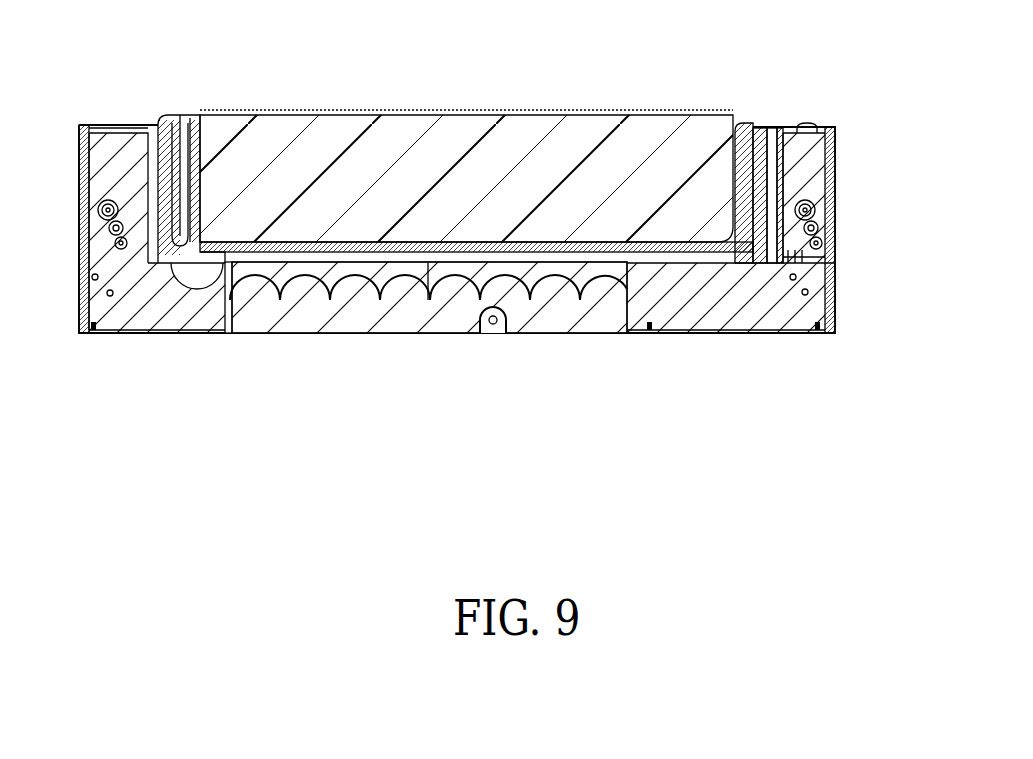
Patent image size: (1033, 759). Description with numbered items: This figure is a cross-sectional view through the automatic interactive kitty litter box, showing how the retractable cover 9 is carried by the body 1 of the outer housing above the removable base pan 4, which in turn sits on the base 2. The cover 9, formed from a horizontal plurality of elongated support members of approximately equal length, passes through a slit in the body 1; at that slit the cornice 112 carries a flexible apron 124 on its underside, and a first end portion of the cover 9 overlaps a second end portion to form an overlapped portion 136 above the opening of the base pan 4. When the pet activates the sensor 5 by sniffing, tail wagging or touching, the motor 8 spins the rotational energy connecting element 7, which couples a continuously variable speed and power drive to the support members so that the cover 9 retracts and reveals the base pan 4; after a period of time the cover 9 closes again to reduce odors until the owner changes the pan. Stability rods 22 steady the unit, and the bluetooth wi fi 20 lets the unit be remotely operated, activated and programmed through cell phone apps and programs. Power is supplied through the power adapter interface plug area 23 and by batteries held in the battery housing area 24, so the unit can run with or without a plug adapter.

The body 1 is at (164, 120).
The base 2 is at (151, 336).
The removable base pan 4 is at (755, 125).
The sensor 5 is at (117, 125).
The rotational energy connecting element 7 is at (100, 225).
The motor 8 is at (796, 278).
The cover 9 is at (645, 112).
The bluetooth wi fi 20 is at (833, 258).
The stability rods 22 is at (86, 283).
The power adapter interface plug area 23 is at (490, 328).
The battery housing area 24 is at (312, 320).
The cornice 112 is at (762, 128).
The flexible apron 124 is at (778, 128).
The overlapped portion 136 is at (600, 100).